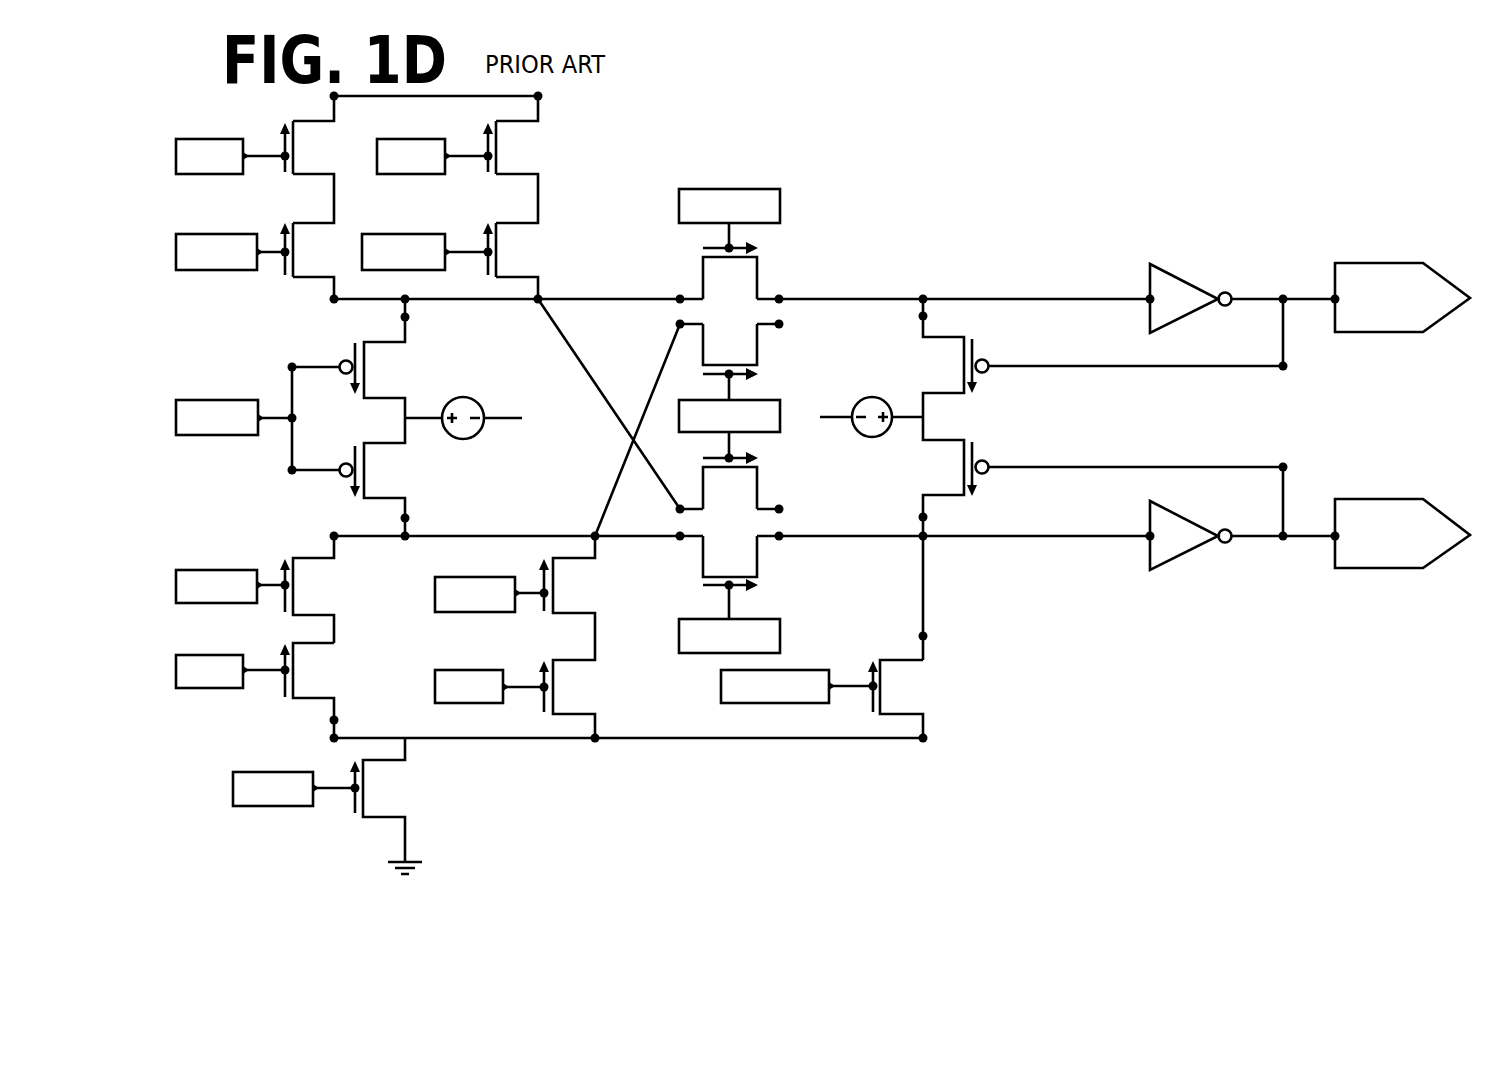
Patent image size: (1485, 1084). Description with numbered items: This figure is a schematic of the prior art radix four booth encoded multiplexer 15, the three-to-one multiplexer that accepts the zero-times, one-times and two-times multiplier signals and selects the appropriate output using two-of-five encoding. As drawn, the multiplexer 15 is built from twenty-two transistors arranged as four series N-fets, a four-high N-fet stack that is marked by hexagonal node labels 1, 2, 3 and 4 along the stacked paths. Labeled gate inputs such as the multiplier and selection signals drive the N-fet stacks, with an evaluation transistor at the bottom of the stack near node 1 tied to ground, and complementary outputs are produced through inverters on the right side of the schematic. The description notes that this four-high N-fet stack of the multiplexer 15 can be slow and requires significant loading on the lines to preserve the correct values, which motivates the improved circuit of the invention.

The radix 4 booth encoded multiplexer 15 is at (853, 138).
The node 1 (evaluation transistor node) 1 is at (355, 806).
The node 2 is at (288, 693).
The node 3 is at (288, 589).
The node 4 (transmission gate) 4 is at (762, 542).